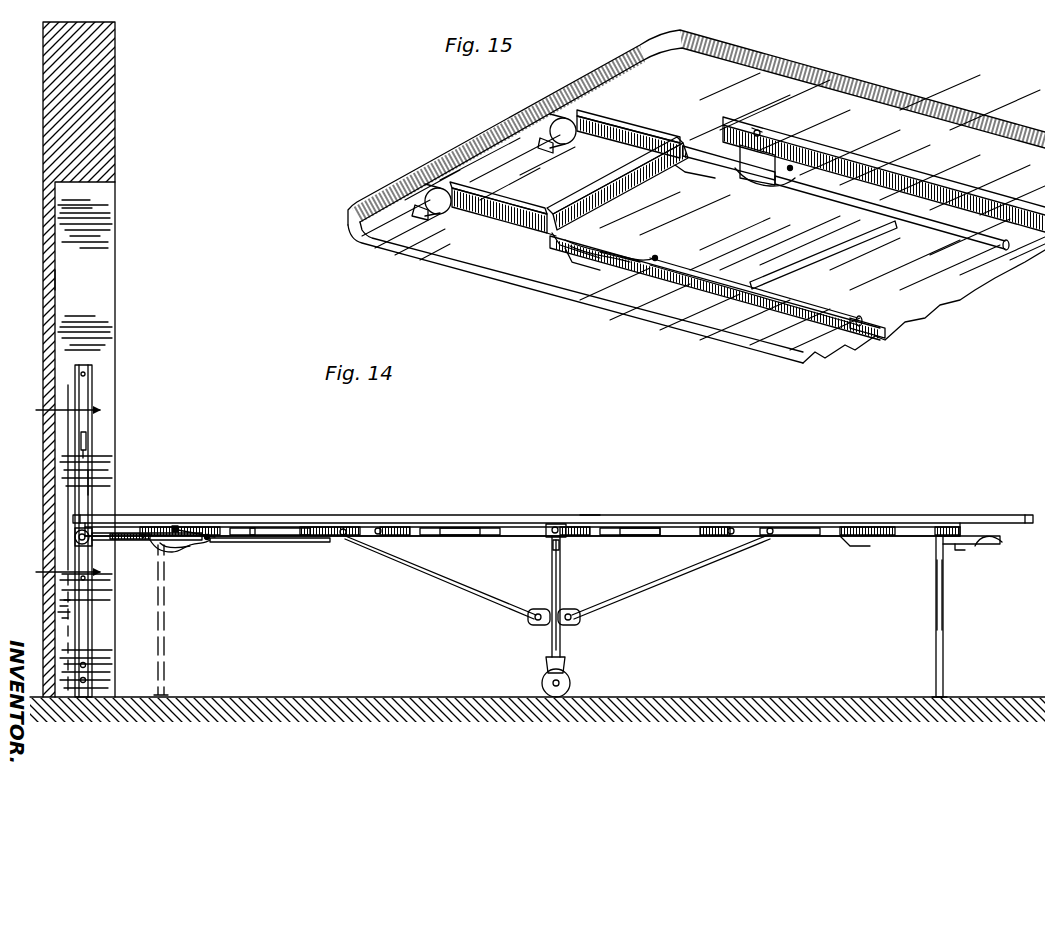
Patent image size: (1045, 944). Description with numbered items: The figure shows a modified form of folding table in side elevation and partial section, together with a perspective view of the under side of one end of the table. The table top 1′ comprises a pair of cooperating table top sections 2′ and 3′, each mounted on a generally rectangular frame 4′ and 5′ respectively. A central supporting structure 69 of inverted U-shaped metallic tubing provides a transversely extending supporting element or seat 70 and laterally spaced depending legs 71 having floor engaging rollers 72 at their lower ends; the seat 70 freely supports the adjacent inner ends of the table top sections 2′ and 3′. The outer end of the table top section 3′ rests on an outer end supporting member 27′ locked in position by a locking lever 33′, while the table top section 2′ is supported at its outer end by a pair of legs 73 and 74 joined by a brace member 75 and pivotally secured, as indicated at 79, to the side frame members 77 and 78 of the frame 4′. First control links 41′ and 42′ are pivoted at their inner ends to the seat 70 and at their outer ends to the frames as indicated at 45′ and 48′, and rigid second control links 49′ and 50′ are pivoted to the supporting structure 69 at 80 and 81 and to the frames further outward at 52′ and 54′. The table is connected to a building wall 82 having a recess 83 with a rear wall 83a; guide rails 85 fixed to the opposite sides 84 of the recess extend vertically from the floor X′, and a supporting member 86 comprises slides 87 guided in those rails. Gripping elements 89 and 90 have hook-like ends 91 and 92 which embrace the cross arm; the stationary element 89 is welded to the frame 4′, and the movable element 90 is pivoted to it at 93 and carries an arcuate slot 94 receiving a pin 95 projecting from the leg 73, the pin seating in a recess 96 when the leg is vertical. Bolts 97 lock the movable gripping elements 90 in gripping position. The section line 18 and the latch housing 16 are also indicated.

In FIG. 14, the building wall 82 is at (120, 114).
In FIG. 14, the recess 83 is at (100, 213).
In FIG. 14, the rear wall of the recess 83a is at (57, 280).
In FIG. 14, the opposite sides of the recess 84 is at (100, 296).
In FIG. 14, the guide rails 85 is at (83, 390).
In FIG. 14, the slides 87 is at (85, 482).
In FIG. 14, the supporting member 86 is at (75, 535).
In FIG. 14, the section line 18- 18 is at (52, 492).
In FIG. 14, the table top section 3′ is at (553, 500).
In FIG. 14, the table top section 2′ is at (522, 500).
In FIG. 15, the table top section 2′ is at (881, 317).
In FIG. 14, the table top 1′ is at (599, 489).
In FIG. 15, the table top 1′ is at (696, 196).
In FIG. 14, the frame 4′ is at (280, 506).
In FIG. 15, the frame 4′ is at (889, 341).
In FIG. 14, the side frame member 77 is at (235, 523).
In FIG. 15, the side frame member 77 is at (872, 165).
In FIG. 14, the pivotal connection 79 is at (175, 523).
In FIG. 15, the pivotal connection 79 is at (758, 130).
In FIG. 14, the movable gripping element 90 is at (140, 546).
In FIG. 15, the movable gripping element 90 is at (497, 228).
In FIG. 14, the arcuate slot 94 is at (176, 554).
In FIG. 15, the arcuate slot 94 is at (592, 255).
In FIG. 14, the bolt 97 is at (207, 546).
In FIG. 15, the bolt 97 is at (670, 252).
In FIG. 14, the leg 73 is at (265, 546).
In FIG. 15, the leg 73 is at (928, 232).
In FIG. 14, the pivotal connection 45′ is at (387, 506).
In FIG. 14, the pivotal connection 52′ is at (357, 557).
In FIG. 14, the pivotal connection 48′ is at (730, 505).
In FIG. 14, the pivotal connection 54′ is at (778, 505).
In FIG. 14, the first control link 41′ is at (461, 546).
In FIG. 14, the first control link 42′ is at (644, 546).
In FIG. 14, the second control link 49′ is at (439, 579).
In FIG. 14, the second control link 50′ is at (671, 577).
In FIG. 14, the central supporting structure 69 is at (562, 592).
In FIG. 14, the transverse supporting element or seat 70 is at (548, 535).
In FIG. 14, the depending legs 71 is at (560, 545).
In FIG. 14, the pivotal connection 80 is at (530, 625).
In FIG. 14, the pivotal connection 81 is at (578, 622).
In FIG. 14, the rollers 72 is at (572, 680).
In FIG. 14, the outer end supporting member 27′ is at (917, 616).
In FIG. 14, the frame 5′ is at (854, 553).
In FIG. 14, the locking lever 33′ is at (972, 568).
In FIG. 14, the floor X′ is at (537, 687).
In FIG. 15, the gripping element 89 is at (470, 218).
In FIG. 15, the hook-like end 92 is at (422, 190).
In FIG. 15, the hook-like end 91 is at (428, 222).
In FIG. 15, the pivotal connection 93 is at (525, 245).
In FIG. 15, the pin 95 is at (632, 254).
In FIG. 15, the recess 96 is at (572, 255).
In FIG. 15, the latch housing 16 is at (790, 160).
In FIG. 15, the brace member 75 is at (830, 256).
In FIG. 15, the side frame member 78 is at (708, 296).
In FIG. 15, the leg 74 is at (840, 325).